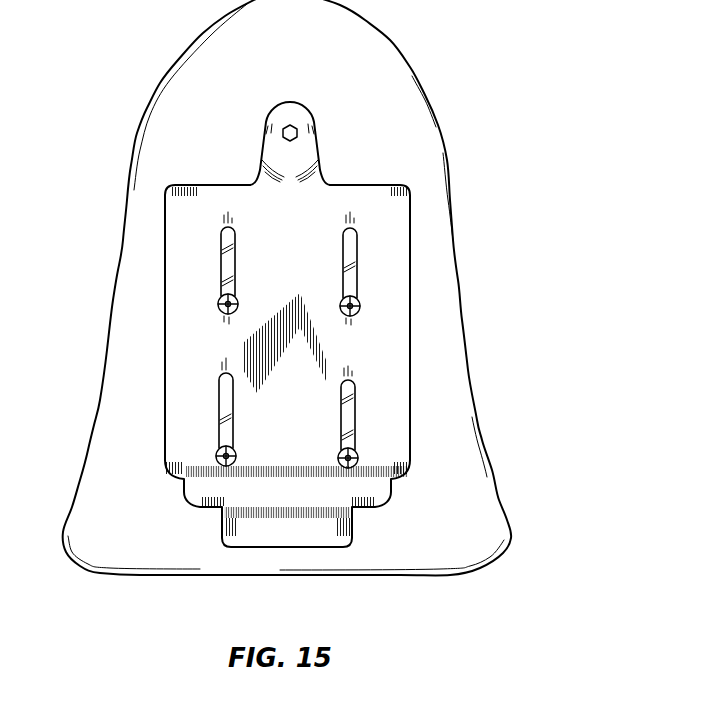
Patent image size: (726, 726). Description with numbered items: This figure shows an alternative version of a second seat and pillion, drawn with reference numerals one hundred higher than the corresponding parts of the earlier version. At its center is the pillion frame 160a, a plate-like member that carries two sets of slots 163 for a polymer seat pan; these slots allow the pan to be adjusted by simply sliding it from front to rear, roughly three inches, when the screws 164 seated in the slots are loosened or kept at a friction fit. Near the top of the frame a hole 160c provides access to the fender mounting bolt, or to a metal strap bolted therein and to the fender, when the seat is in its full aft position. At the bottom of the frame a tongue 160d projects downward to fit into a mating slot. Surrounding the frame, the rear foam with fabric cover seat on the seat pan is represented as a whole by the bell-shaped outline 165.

The rear foam with fabric cover seat 165 is at (462, 195).
The pillion frame 160a is at (418, 372).
The hole 160c is at (305, 120).
The slots 163 is at (237, 264).
The screws 164 is at (236, 455).
The tongue 160d is at (250, 548).